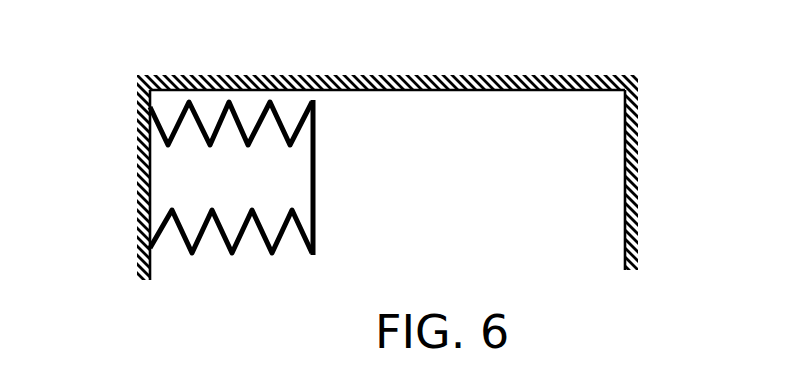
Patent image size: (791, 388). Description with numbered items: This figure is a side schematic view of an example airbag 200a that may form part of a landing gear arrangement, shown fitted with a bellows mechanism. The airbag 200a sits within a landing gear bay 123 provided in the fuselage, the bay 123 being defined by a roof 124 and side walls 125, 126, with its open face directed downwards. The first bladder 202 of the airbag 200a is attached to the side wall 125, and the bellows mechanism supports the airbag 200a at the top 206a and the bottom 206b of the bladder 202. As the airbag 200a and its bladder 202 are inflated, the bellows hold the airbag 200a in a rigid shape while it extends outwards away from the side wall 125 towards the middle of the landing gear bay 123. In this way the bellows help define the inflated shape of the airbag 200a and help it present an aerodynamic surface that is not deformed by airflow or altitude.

The landing gear bay 123 is at (395, 159).
The roof 124 is at (487, 88).
The side wall 125 is at (142, 117).
The side wall 126 is at (632, 185).
The first bladder 202 is at (175, 183).
The airbag 200a is at (324, 202).
The top of the bladder 206a is at (210, 130).
The bottom of the bladder 206b is at (233, 240).